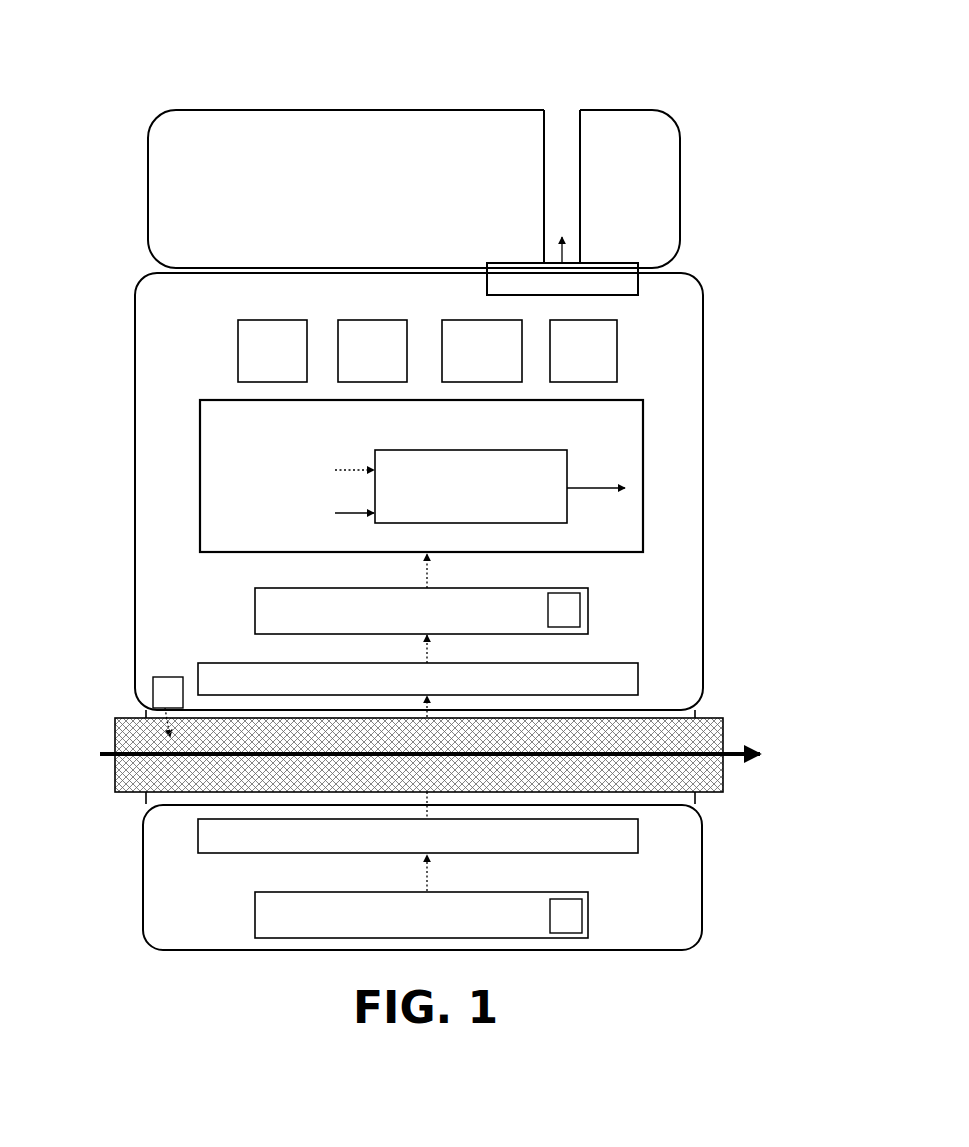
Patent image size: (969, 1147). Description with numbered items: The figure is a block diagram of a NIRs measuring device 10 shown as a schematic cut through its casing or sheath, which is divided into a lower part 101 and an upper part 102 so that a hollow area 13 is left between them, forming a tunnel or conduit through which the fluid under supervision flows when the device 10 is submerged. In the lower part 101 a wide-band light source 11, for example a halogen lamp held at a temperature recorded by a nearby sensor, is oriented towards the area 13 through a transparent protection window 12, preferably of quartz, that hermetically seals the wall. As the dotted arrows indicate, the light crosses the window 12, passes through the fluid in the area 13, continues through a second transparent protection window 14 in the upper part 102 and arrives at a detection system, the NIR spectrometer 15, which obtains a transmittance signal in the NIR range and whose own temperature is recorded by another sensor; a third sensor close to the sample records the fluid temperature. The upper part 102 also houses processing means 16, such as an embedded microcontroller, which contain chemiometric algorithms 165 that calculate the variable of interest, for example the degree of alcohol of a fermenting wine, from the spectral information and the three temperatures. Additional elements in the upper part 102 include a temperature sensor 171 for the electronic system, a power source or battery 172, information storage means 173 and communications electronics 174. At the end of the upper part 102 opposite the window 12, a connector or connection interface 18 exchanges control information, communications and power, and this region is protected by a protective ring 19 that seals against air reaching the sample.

The measuring device 10 is at (708, 118).
The protective ring 19 is at (160, 135).
The connector or connection interface 18 is at (610, 275).
The upper part of the sheath 102 is at (667, 497).
The temperature sensor 171 is at (238, 352).
The power source or battery 172 is at (338, 320).
The information storage means 173 is at (505, 322).
The communications electronics 174 is at (610, 352).
The processing means 16 is at (428, 483).
The chemiometric algorithms 165 is at (541, 505).
The NIR spectrometer 15 is at (290, 612).
The transparent protection window 14 is at (215, 680).
The area through which the fluid flows 13 is at (97, 720).
The lower part of the sheath 101 is at (675, 870).
The transparent protection window 12 is at (210, 838).
The light source 11 is at (275, 920).